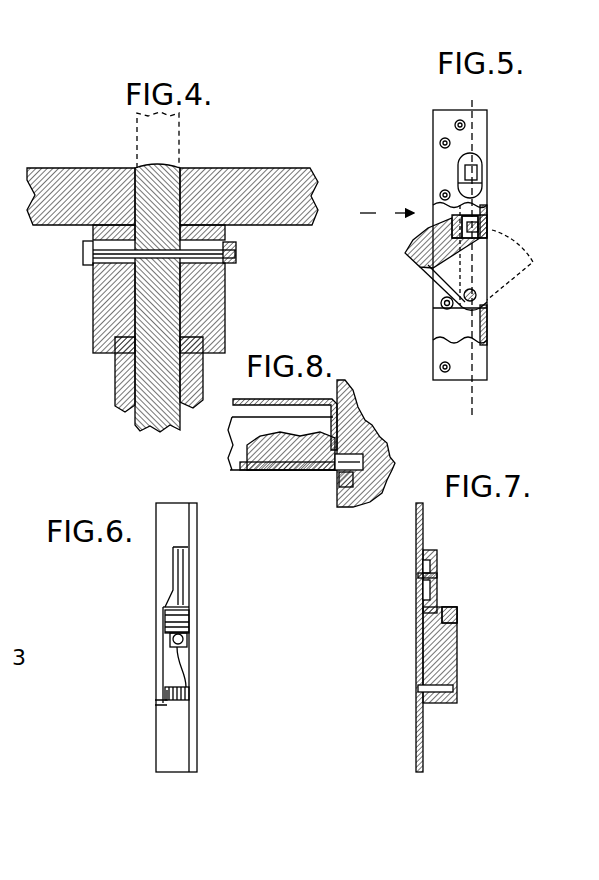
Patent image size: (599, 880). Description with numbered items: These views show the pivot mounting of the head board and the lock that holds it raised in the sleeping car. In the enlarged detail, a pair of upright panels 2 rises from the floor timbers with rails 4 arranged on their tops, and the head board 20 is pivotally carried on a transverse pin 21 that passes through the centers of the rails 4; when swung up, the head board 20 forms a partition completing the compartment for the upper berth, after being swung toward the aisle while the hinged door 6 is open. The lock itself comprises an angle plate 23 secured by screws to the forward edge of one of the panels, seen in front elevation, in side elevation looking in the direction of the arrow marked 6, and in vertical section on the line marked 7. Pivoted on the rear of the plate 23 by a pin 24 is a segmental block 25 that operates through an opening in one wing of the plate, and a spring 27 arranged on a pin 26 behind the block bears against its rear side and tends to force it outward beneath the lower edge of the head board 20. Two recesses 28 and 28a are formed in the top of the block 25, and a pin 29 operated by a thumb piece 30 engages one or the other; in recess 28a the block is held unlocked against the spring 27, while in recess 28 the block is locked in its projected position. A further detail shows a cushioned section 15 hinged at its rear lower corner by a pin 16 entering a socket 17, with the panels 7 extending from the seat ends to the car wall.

In FIG. 4, the panels 2 is at (115, 382).
In FIG. 4, the rails 4 is at (93, 312).
In FIG. 5, the hinged door 6 is at (387, 214).
In FIG. 5, the panels 7 is at (472, 257).
In FIG. 8, the cushioned sections 15 is at (282, 401).
In FIG. 8, the pins 16 is at (363, 463).
In FIG. 8, the sockets 17 is at (342, 478).
In FIG. 4, the head board 20 is at (160, 178).
In FIG. 4, the transverse pin 21 is at (85, 252).
In FIG. 5, the angle plate 23 is at (443, 155).
In FIG. 6, the angle plate 23 is at (178, 530).
In FIG. 7, the angle plate 23 is at (423, 530).
In FIG. 5, the pin 24 is at (477, 294).
In FIG. 7, the pin 24 is at (458, 690).
In FIG. 5, the segmental block 25 is at (477, 266).
In FIG. 6, the segmental block 25 is at (187, 625).
In FIG. 7, the segmental block 25 is at (437, 638).
In FIG. 5, the pin 26 is at (450, 310).
In FIG. 6, the pin 26 is at (193, 692).
In FIG. 5, the spring 27 is at (432, 288).
In FIG. 6, the spring 27 is at (170, 703).
In FIG. 5, the recess 28 is at (405, 252).
In FIG. 6, the recess 28 is at (184, 647).
In FIG. 5, the recess 28a is at (480, 230).
In FIG. 7, the recess 28a is at (457, 614).
In FIG. 5, the pin 29 is at (487, 215).
In FIG. 6, the pin 29 is at (180, 585).
In FIG. 7, the pin 29 is at (438, 613).
In FIG. 5, the thumb piece 30 is at (482, 180).
In FIG. 7, the thumb piece 30 is at (418, 576).